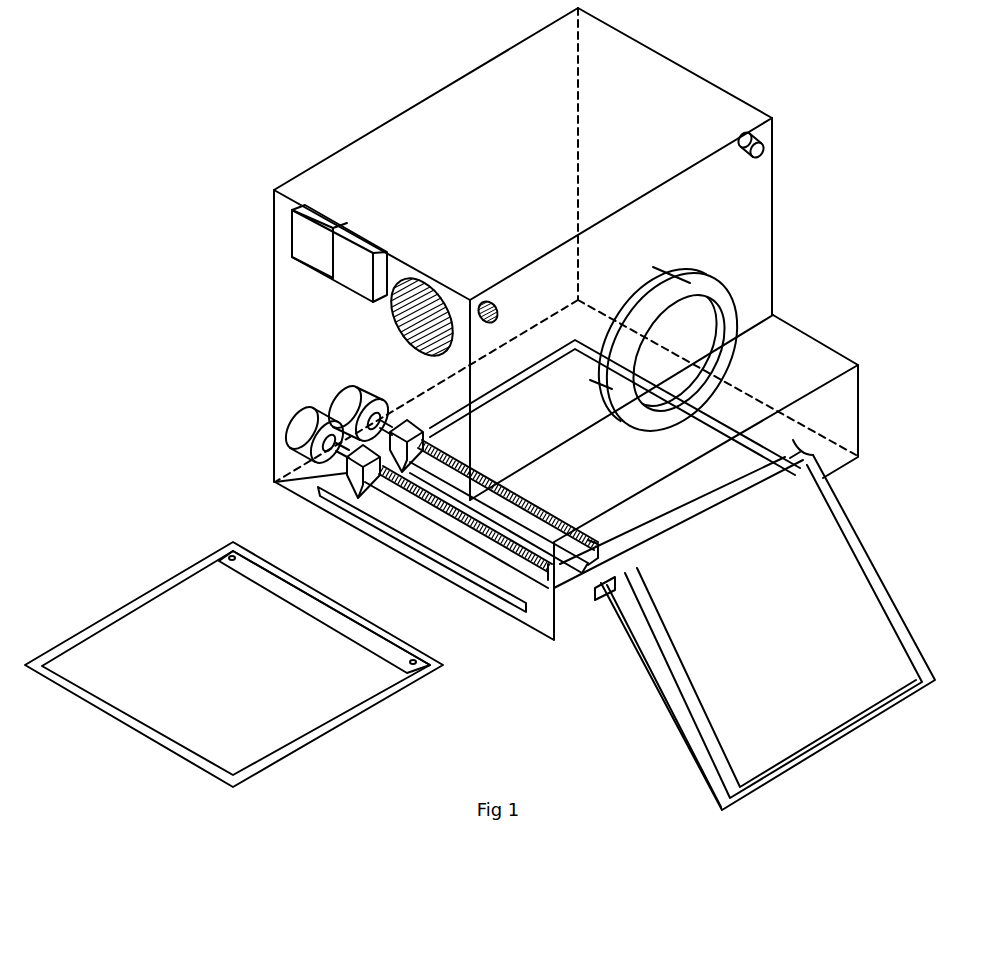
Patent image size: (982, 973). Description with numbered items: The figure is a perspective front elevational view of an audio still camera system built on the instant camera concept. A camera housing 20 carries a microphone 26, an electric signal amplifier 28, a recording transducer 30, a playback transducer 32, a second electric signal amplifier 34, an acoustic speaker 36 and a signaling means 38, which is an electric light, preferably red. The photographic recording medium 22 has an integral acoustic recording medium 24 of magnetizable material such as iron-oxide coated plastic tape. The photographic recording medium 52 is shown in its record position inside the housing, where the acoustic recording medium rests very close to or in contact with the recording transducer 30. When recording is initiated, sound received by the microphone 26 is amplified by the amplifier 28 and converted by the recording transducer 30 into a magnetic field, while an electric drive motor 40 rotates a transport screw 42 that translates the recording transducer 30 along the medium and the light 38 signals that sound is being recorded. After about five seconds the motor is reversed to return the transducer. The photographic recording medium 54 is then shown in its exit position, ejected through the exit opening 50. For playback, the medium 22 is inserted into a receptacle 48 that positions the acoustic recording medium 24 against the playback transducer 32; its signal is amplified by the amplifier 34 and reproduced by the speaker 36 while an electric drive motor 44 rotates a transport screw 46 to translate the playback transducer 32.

The camera housing 20 is at (660, 50).
The photographic recording medium 22 is at (92, 632).
The acoustic recording medium 24 is at (277, 590).
The microphone 26 is at (483, 300).
The electric signal amplifier 28 is at (355, 257).
The recording transducer 30 is at (402, 410).
The playback transducer 32 is at (350, 470).
The electric signal amplifier 34 is at (312, 236).
The acoustic speaker 36 is at (397, 320).
The signaling means 38 is at (758, 148).
The electric drive motor 40 is at (340, 397).
The transport screw 42 is at (593, 600).
The electric drive motor 44 is at (295, 432).
The transport screw 46 is at (547, 565).
The receptacle 48 is at (470, 582).
The exit opening 50 is at (800, 458).
The photographic recording medium in record position 52 is at (795, 460).
The photographic recording medium in exit position 54 is at (858, 533).